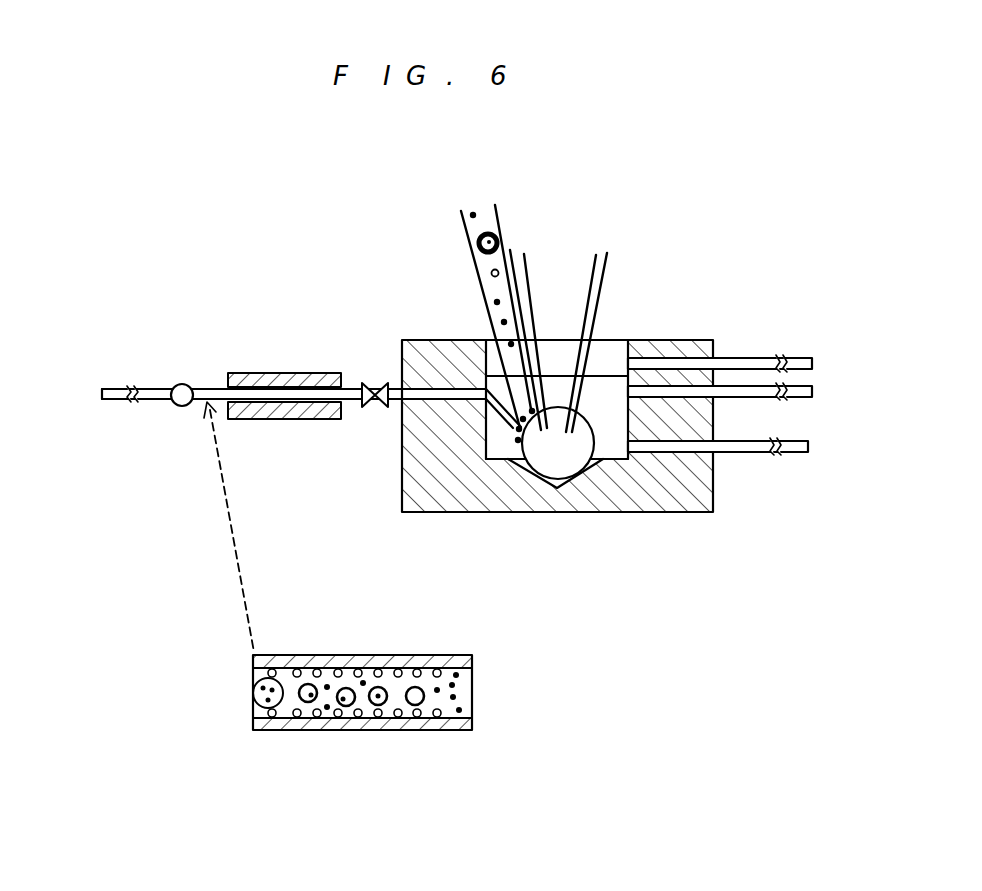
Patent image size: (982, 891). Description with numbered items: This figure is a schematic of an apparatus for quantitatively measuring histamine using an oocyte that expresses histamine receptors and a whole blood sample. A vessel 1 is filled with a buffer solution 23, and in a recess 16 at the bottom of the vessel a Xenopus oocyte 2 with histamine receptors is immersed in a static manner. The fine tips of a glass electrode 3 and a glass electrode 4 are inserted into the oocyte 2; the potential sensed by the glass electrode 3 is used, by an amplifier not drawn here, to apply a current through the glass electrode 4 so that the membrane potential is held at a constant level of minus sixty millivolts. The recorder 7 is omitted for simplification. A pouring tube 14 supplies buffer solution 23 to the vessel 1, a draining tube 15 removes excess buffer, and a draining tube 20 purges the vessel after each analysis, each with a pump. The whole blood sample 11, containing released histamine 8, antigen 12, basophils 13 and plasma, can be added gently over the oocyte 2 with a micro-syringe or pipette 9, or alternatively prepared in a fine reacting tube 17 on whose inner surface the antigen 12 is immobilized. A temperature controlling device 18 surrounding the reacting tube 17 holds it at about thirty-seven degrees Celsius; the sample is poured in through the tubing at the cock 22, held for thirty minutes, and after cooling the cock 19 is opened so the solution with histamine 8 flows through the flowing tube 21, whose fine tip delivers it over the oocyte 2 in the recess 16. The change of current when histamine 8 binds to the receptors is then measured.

The vessel 1 is at (668, 512).
The Xenopus oocyte 2 is at (584, 426).
The glass electrode 3 is at (526, 268).
The glass electrode 4 is at (603, 266).
The recorder 7 is at (214, 390).
The histamine 8 is at (473, 213).
The micro-syringe or pipette 9 is at (484, 292).
The whole blood sample 11 is at (483, 262).
The antigen 12 is at (491, 273).
The basophils 13 is at (494, 233).
The pouring tube 14 is at (738, 358).
The draining tube 15 is at (736, 397).
The recess 16 is at (561, 489).
The fine reacting tube 17 is at (327, 731).
The temperature controlling device 18 is at (275, 373).
The cock 19 is at (372, 384).
The draining tube 20 is at (746, 453).
The flowing tube 21 is at (420, 399).
The cock 22 is at (180, 406).
The buffer solution 23 is at (560, 394).